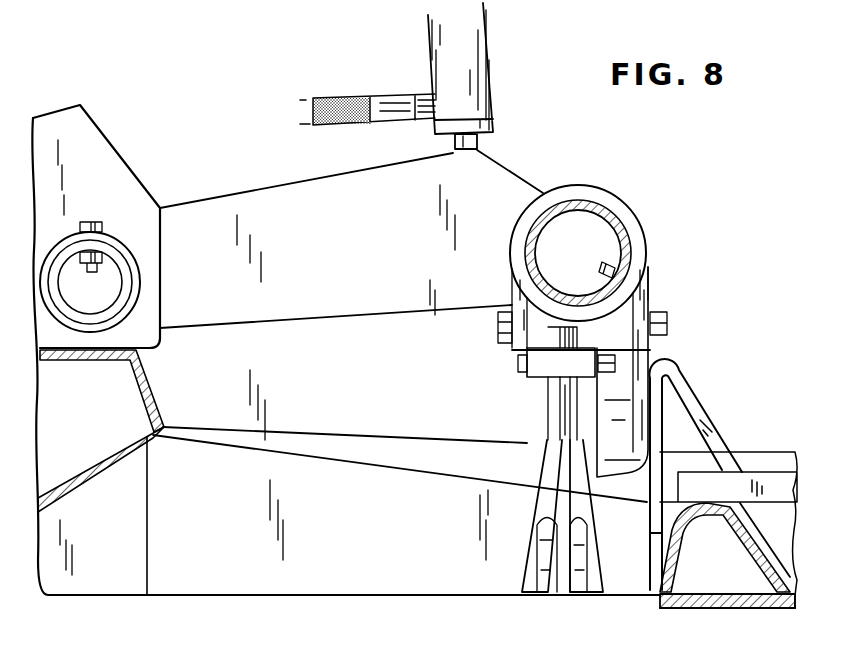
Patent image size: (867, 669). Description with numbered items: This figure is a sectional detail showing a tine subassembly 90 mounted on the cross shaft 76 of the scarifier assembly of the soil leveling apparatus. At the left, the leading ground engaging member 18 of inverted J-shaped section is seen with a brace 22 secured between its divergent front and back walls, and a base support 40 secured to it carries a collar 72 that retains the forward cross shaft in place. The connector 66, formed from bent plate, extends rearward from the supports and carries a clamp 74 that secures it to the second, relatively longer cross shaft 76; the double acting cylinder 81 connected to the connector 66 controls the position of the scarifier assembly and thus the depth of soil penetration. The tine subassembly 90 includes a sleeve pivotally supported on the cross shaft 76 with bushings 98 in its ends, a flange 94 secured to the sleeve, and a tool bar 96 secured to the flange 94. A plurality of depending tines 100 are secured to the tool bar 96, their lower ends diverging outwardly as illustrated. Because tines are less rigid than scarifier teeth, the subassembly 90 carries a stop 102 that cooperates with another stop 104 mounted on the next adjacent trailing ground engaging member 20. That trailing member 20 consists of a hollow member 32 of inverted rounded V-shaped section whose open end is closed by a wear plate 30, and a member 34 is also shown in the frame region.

The leading ground engaging member 18 is at (162, 388).
The trailing ground engaging member 20 is at (690, 611).
The brace 22 is at (84, 487).
The wear plate 30 is at (728, 611).
The hollow member 32 is at (762, 560).
The rail member 34 is at (297, 433).
The base support 40 is at (127, 183).
The connector 66 is at (323, 297).
The collar 72 is at (140, 253).
The clamp 74 is at (513, 348).
The second cross shaft 76 is at (127, 287).
The double acting cylinder 81 is at (483, 87).
The tine subassembly 90 is at (524, 383).
The flange 94 is at (657, 350).
The tool bar 96 is at (524, 386).
The bushing 98 is at (627, 222).
The tine 100 is at (540, 597).
The stop 102 is at (620, 463).
The stop 104 is at (703, 400).